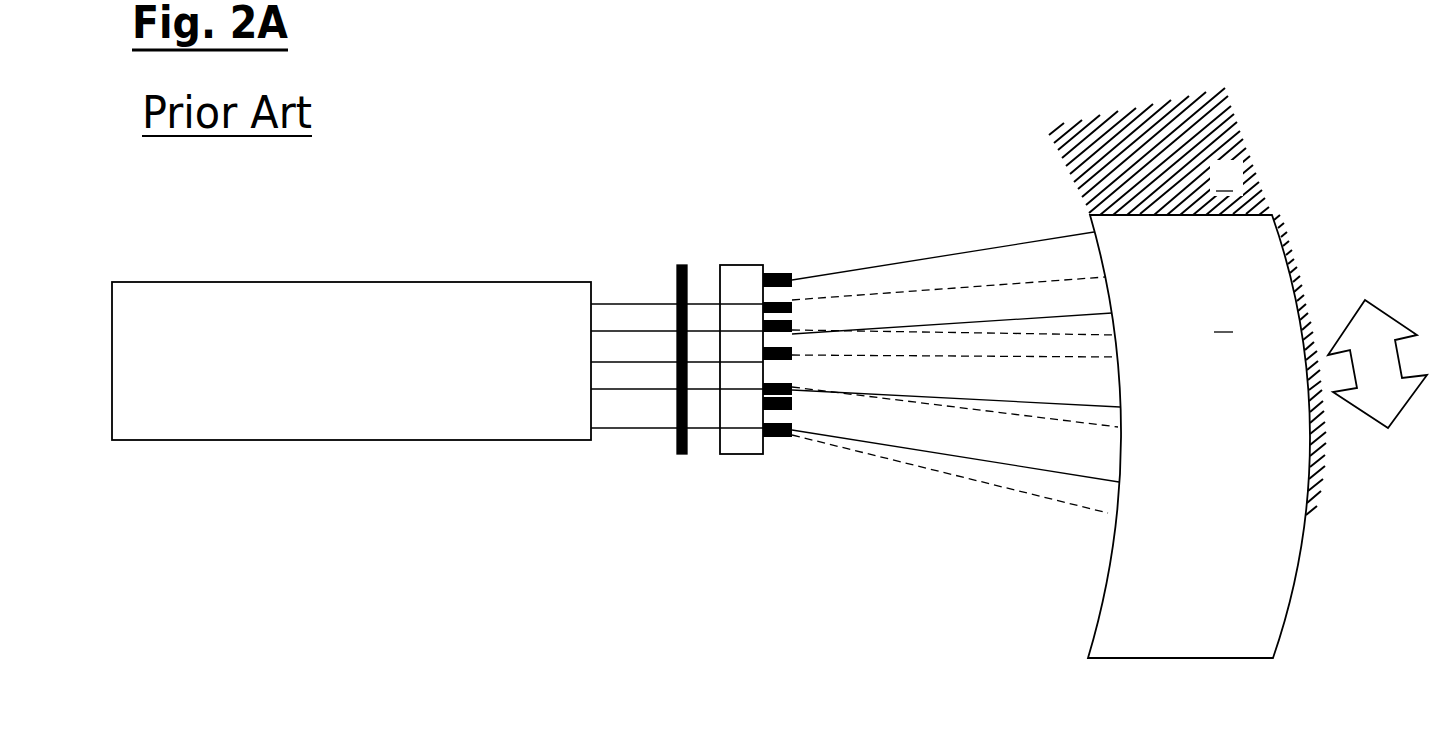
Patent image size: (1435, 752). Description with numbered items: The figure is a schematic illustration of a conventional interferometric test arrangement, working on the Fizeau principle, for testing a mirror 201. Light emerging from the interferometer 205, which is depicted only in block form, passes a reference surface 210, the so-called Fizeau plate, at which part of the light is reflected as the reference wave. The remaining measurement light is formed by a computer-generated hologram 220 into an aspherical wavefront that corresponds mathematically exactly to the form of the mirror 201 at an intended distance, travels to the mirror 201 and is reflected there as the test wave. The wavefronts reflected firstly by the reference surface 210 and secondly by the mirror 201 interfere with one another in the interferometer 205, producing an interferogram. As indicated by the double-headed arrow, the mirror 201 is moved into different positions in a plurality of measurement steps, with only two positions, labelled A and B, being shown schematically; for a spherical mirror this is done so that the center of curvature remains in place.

The mirror 201 is at (1268, 593).
The interferometer 205 is at (213, 398).
The reference surface 210 is at (687, 445).
The computer-generated hologram 220 is at (765, 442).